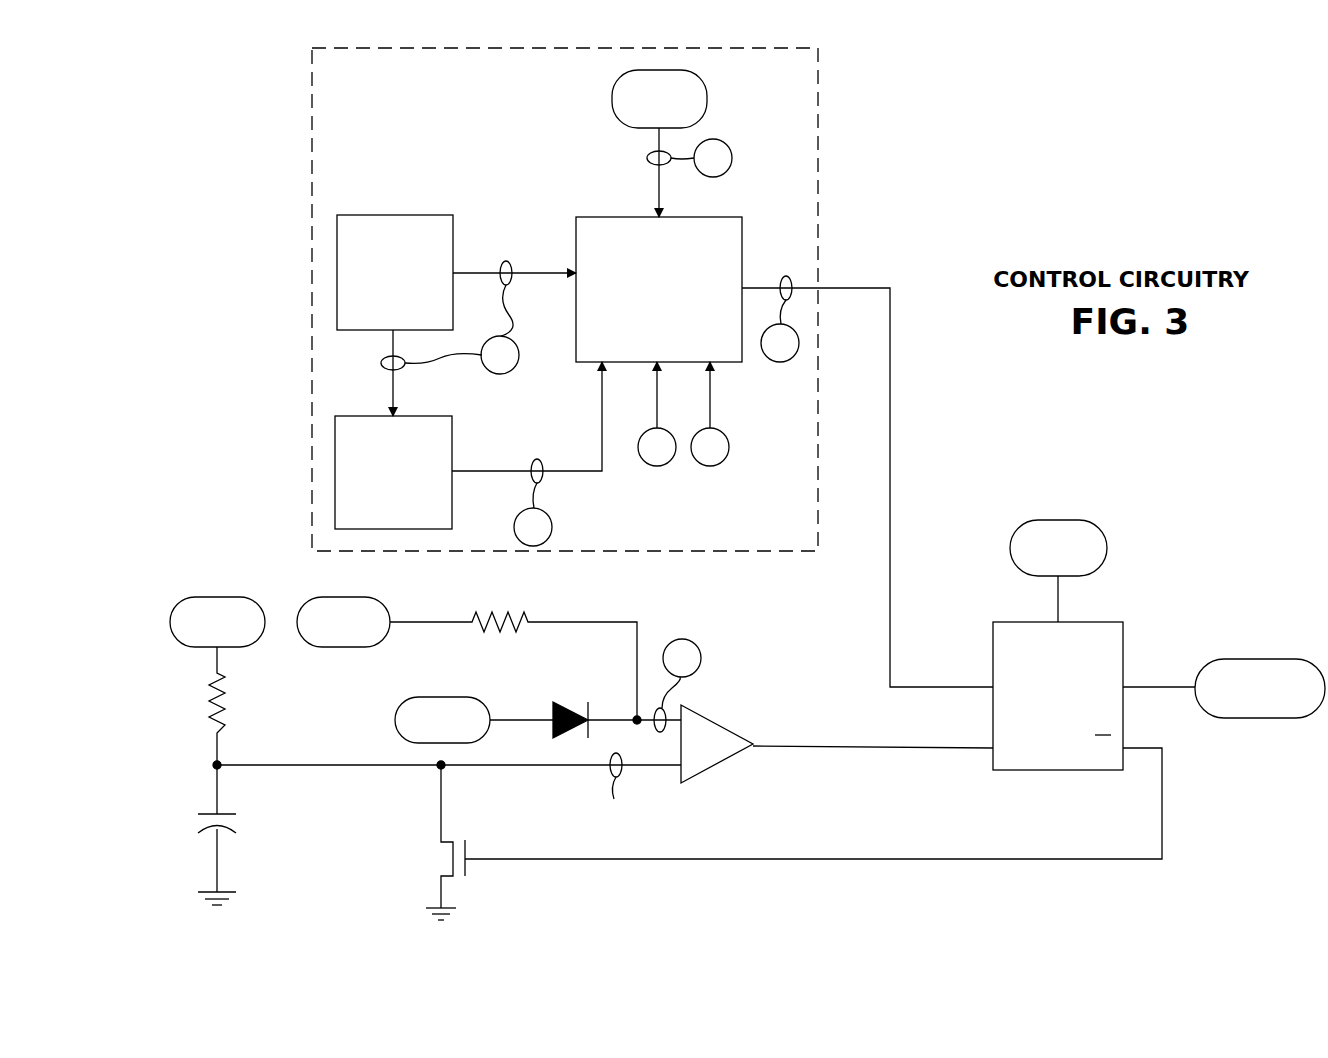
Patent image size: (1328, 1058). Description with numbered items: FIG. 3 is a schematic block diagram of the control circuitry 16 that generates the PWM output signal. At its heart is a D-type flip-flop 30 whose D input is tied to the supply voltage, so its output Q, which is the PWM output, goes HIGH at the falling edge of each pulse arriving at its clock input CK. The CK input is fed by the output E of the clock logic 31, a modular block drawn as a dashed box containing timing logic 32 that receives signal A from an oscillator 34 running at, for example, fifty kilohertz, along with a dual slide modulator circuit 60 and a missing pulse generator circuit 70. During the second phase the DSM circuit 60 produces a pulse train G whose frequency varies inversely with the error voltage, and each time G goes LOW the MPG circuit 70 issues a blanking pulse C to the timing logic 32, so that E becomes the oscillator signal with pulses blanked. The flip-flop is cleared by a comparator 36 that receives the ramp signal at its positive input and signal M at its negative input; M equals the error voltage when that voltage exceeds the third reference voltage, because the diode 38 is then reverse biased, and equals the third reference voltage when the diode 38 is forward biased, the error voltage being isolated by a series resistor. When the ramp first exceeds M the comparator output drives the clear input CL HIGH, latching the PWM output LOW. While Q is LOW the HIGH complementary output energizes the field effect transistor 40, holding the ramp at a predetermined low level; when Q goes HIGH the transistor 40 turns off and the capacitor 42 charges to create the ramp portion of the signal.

The control circuitry 16 is at (223, 92).
The D-type flip-flop 30 is at (1000, 622).
The clock logic 31 is at (818, 128).
The timing logic 32 is at (619, 217).
The oscillator 34 is at (612, 95).
The comparator 36 is at (723, 770).
The diode 38 is at (571, 703).
The field effect transistor 40 is at (473, 885).
The capacitor 42 is at (183, 815).
The dual slide modulator (DSM) circuit 60 is at (399, 215).
The missing pulse generator (MPG) circuit 70 is at (363, 416).